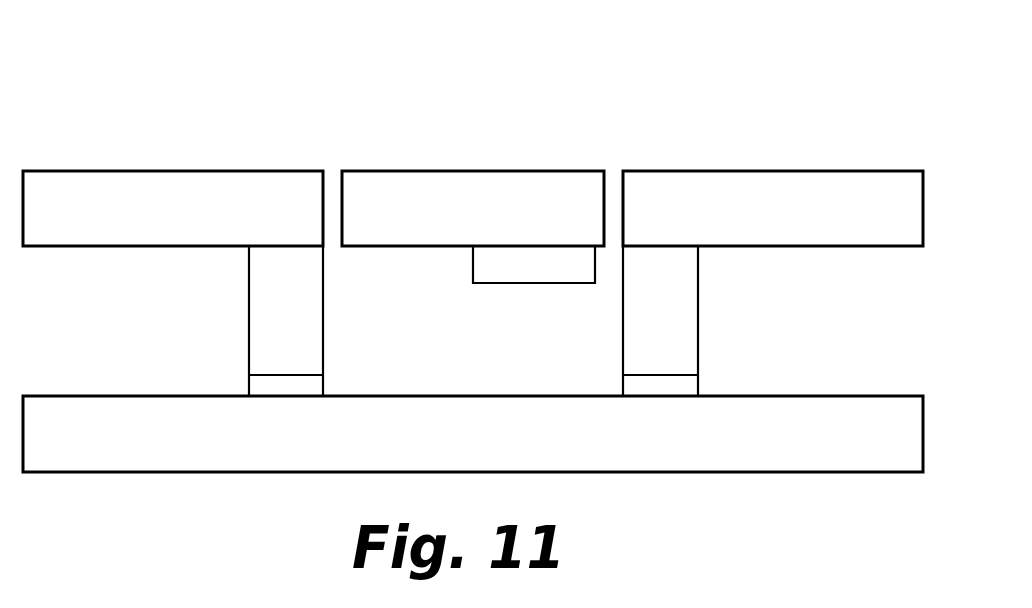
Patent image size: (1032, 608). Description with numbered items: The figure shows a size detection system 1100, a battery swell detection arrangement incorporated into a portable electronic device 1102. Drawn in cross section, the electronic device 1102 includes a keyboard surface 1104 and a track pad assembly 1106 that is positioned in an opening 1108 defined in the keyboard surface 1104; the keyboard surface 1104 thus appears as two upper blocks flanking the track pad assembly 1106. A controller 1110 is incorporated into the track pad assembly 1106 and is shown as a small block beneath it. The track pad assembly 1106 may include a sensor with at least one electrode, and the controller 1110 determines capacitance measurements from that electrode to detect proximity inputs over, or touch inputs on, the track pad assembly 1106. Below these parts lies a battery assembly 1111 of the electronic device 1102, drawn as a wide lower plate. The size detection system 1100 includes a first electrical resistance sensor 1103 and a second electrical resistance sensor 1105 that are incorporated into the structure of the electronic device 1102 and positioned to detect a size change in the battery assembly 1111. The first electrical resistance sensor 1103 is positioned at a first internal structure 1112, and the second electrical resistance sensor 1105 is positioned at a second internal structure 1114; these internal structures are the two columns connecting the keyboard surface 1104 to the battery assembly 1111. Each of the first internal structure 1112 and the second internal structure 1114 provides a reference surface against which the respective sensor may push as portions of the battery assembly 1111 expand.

The size detection system 1100 is at (211, 70).
The electronic device 1102 is at (100, 113).
The first electrical resistance sensor 1103 is at (226, 381).
The keyboard surface 1104 is at (276, 185).
The second electrical resistance sensor 1105 is at (720, 381).
The track pad assembly 1106 is at (390, 187).
The opening 1108 is at (605, 165).
The controller 1110 is at (538, 285).
The battery assembly 1111 is at (407, 433).
The first internal structure 1112 is at (275, 277).
The second internal structure 1114 is at (698, 275).